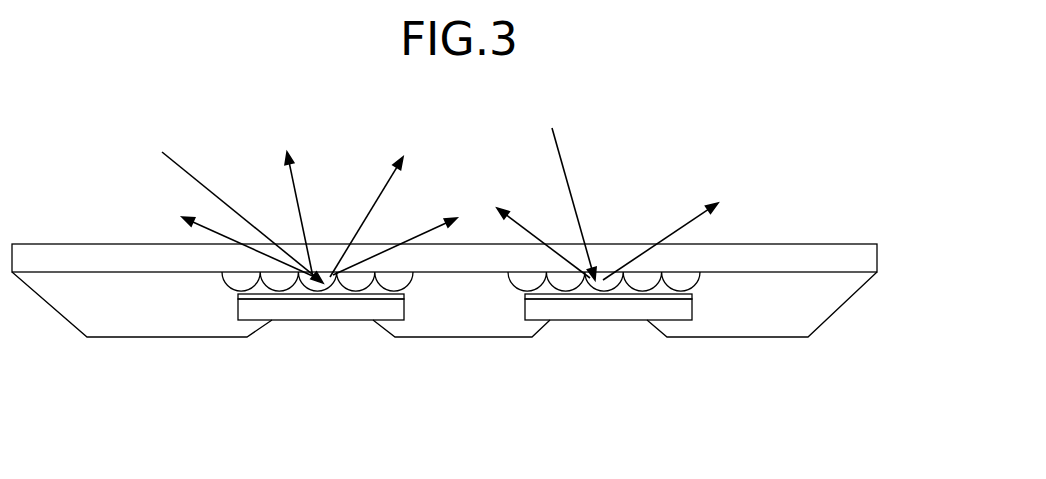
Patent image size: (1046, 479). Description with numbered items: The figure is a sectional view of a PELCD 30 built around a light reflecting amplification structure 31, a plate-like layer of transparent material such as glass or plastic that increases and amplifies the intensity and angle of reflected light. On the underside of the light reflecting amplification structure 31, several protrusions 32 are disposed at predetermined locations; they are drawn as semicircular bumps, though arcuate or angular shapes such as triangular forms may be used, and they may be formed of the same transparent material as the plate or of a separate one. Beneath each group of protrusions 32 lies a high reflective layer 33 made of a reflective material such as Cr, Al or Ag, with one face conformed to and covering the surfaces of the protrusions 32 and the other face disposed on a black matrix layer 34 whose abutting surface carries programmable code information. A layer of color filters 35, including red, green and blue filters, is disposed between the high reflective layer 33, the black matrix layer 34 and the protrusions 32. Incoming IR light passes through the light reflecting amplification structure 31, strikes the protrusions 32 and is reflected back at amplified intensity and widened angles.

The PELCD 30 is at (70, 182).
The light reflecting amplification structure 31 is at (877, 257).
The protrusion 32 is at (405, 277).
The high reflective layer 33 is at (294, 304).
The black matrix layer 34 is at (326, 313).
The layer of color filters 35 is at (171, 348).